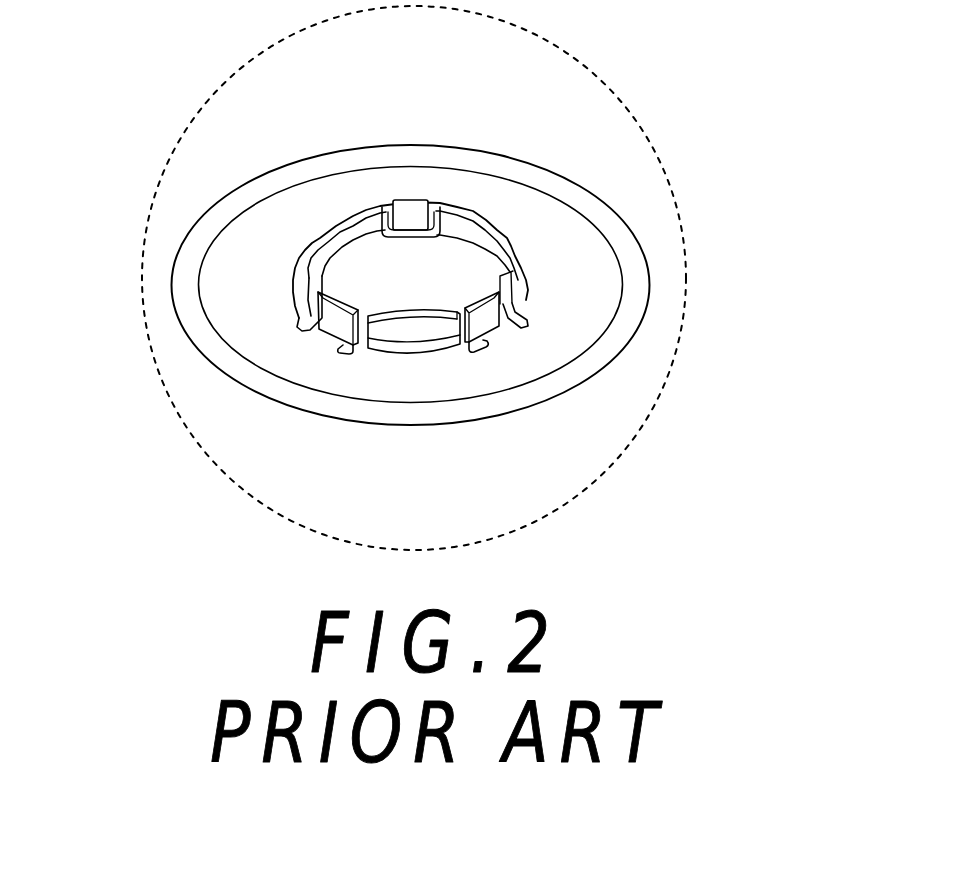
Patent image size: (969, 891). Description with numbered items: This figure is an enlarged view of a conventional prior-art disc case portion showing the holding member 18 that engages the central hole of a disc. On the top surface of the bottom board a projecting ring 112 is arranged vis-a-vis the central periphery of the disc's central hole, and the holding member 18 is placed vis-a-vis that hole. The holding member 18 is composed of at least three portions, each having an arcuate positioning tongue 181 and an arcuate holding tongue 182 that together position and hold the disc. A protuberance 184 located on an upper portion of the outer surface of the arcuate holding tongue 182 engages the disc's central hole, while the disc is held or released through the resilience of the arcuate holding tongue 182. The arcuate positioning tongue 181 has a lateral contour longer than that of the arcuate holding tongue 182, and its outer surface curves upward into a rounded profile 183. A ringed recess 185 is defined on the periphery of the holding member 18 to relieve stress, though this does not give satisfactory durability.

The holding member 18 is at (538, 147).
The projecting ring 112 is at (202, 333).
The arcuate positioning tongue 181 is at (507, 238).
The arcuate holding tongue 182 is at (488, 328).
The rounded profile 183 is at (512, 285).
The protuberance 184 is at (523, 327).
The ringed recess 185 is at (526, 303).